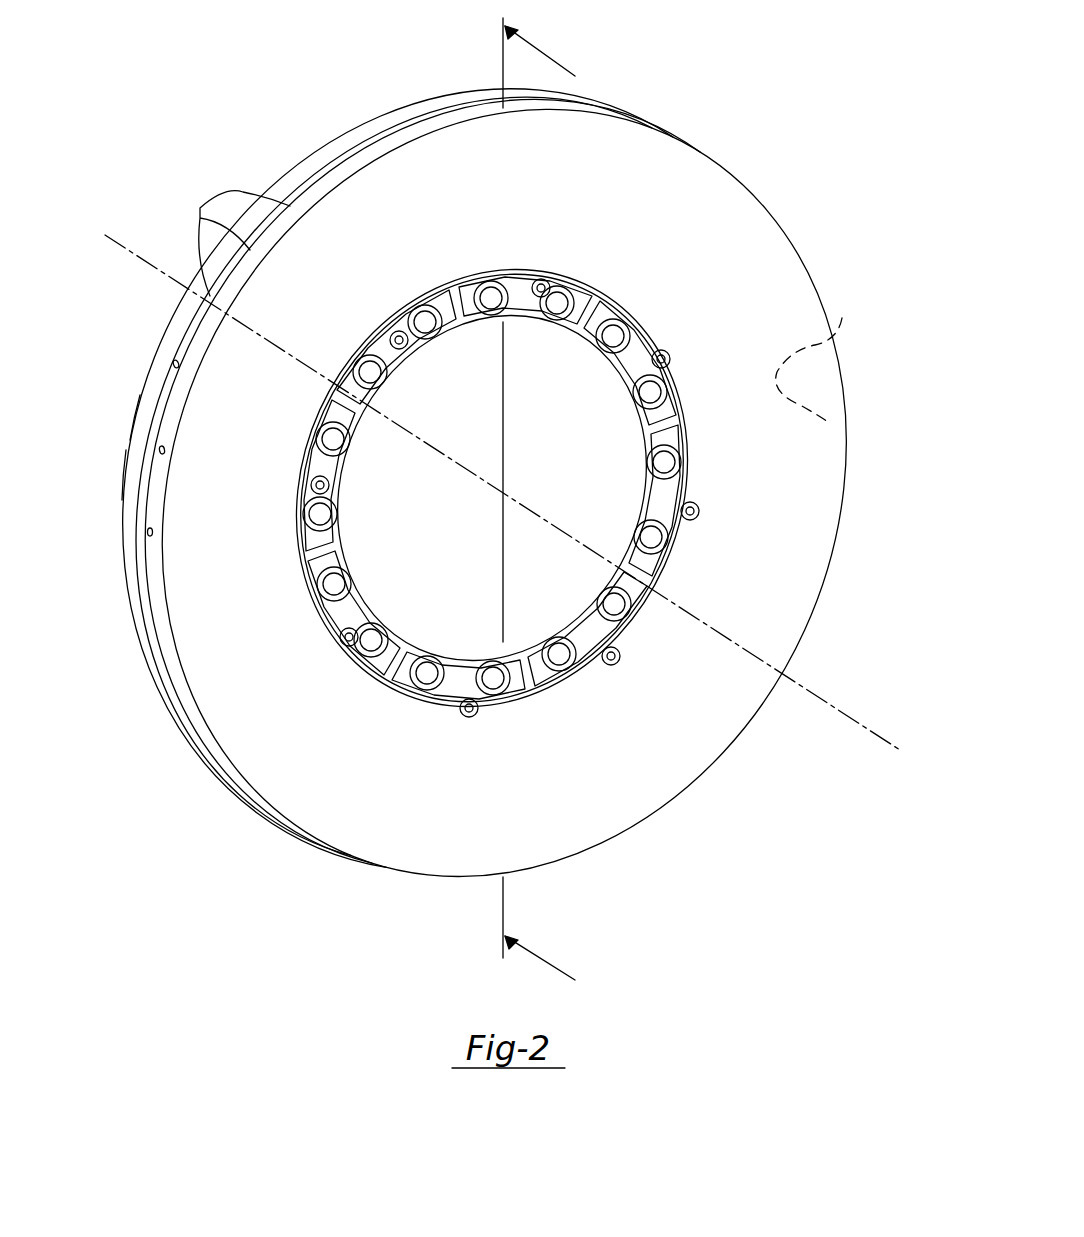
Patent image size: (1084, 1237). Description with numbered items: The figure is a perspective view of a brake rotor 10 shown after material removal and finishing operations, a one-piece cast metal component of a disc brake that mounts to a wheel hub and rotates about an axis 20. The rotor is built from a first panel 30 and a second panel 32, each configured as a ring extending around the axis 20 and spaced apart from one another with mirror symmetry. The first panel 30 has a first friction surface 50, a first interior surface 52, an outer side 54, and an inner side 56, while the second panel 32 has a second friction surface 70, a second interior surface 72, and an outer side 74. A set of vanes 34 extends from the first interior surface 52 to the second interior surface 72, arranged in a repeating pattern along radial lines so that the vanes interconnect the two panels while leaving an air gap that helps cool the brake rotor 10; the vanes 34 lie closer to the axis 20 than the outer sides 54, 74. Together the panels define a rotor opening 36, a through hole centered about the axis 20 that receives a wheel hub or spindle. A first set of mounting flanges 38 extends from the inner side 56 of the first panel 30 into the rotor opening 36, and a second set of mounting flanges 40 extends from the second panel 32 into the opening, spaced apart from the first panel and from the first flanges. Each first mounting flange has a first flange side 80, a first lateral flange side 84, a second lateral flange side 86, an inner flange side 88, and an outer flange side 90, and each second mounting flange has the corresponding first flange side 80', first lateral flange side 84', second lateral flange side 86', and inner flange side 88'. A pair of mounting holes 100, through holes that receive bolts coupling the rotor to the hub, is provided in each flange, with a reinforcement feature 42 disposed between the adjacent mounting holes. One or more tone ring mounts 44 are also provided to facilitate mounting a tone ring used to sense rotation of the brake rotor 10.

The brake rotor 10 is at (768, 88).
The axis 20 is at (815, 712).
The first panel 30 is at (345, 175).
The second panel 32 is at (437, 100).
The set of vanes 34 is at (223, 243).
The rotor opening 36 is at (497, 459).
The first set of mounting flanges 38 is at (522, 340).
The second set of mounting flanges 40 is at (406, 365).
The reinforcement feature 42 is at (640, 502).
The tone ring mount 44 is at (698, 483).
The first friction surface 50 is at (828, 432).
The first interior surface 52 is at (819, 344).
The outer side 54 is at (150, 490).
The inner side 56 is at (645, 655).
The second friction surface 70 is at (148, 345).
The second interior surface 72 is at (175, 372).
The outer side 74 is at (135, 420).
The first flange side 80 is at (458, 640).
The first flange side 80' is at (529, 326).
The first lateral flange side 84 is at (463, 271).
The first lateral flange side 84' is at (575, 268).
The second lateral flange side 86 is at (519, 570).
The second lateral flange side 86' is at (571, 511).
The inner flange side 88 is at (621, 511).
The inner flange side 88' is at (618, 402).
The outer flange side 90 is at (628, 312).
The mounting hole 100 is at (430, 672).